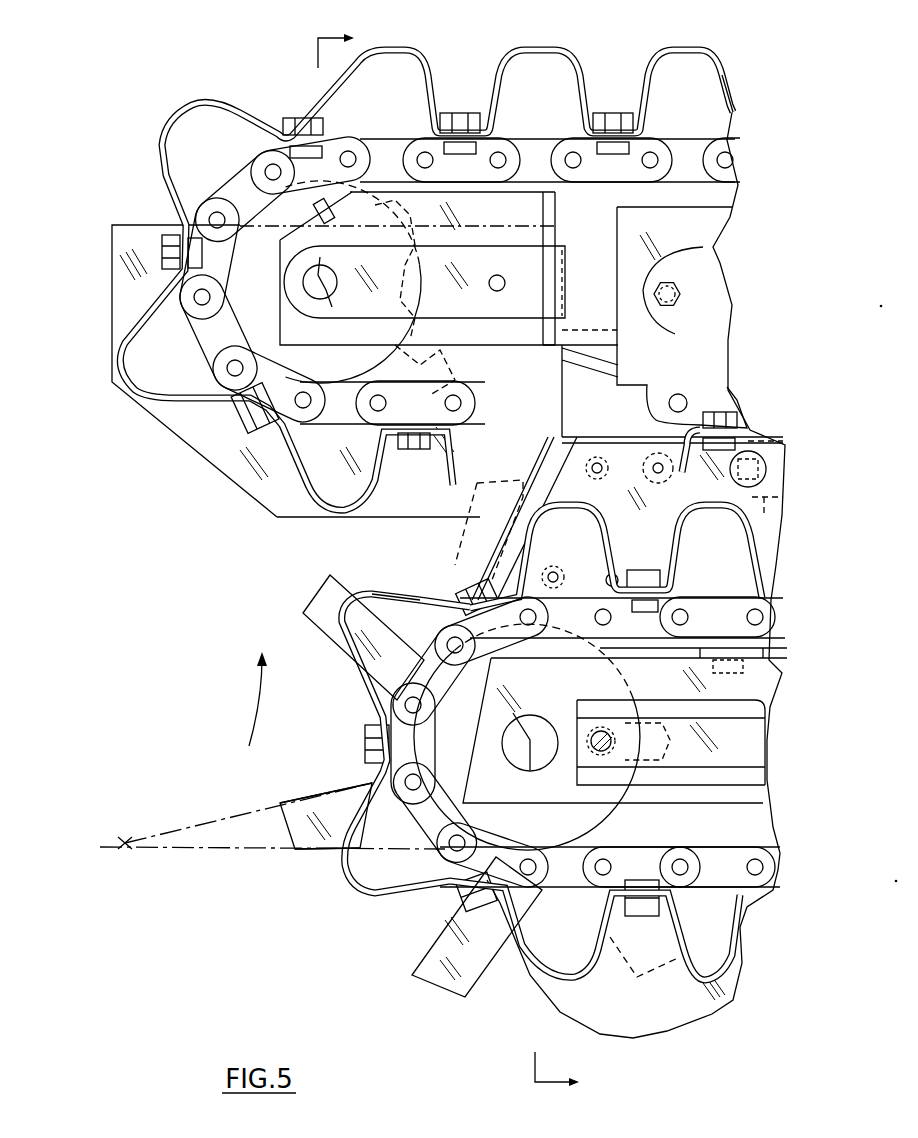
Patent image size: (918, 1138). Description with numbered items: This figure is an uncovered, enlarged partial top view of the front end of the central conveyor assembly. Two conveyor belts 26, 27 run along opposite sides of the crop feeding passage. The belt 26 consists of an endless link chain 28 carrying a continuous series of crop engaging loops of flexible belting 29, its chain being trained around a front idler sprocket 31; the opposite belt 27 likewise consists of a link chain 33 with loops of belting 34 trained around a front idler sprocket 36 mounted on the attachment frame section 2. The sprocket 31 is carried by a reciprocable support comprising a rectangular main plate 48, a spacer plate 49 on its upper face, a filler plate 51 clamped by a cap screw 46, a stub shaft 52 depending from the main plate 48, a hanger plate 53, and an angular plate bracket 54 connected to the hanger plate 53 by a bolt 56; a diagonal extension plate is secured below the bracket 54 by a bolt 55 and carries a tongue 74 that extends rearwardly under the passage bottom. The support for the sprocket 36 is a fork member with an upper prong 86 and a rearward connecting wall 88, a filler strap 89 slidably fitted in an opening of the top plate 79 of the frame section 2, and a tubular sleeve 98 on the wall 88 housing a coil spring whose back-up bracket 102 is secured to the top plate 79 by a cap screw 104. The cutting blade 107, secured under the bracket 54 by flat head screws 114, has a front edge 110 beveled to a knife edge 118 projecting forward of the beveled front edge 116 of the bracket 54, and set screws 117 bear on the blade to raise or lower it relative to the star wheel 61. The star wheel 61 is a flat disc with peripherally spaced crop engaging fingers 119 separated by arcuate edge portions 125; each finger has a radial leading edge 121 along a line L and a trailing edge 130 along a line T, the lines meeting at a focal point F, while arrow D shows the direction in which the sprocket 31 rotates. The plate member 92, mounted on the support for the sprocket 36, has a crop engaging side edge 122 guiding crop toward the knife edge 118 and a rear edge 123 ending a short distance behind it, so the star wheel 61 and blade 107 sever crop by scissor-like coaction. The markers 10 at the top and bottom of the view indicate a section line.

The attachment frame section 2 is at (714, 277).
The section line 10 is at (460, 556).
The conveyor belt 26 is at (672, 840).
The conveyor belt 27 is at (738, 99).
The link chain 28 is at (715, 847).
The loops of flexible belting 29 is at (380, 900).
The front idler sprocket 31 is at (466, 744).
The link chain 33 is at (535, 148).
The loops of flexible belting 34 is at (493, 80).
The front idler sprocket 36 is at (420, 365).
The cap screw 46 is at (614, 741).
The main plate 48 is at (482, 705).
The spacer plate 49 is at (598, 705).
The filler plate 51 is at (722, 700).
The stub shaft 52 is at (540, 716).
The hanger plate 53 is at (739, 667).
The angular plate bracket 54 is at (617, 443).
The bolt 55 is at (730, 471).
The bolt 56 is at (712, 612).
The star wheel 61 is at (432, 999).
The tongue 74 is at (762, 502).
The top plate 79 is at (703, 250).
The upper prong 86 is at (331, 340).
The connecting wall 88 is at (555, 215).
The filler strap 89 is at (496, 246).
The plate member 92 is at (208, 471).
The tubular sleeve 98 is at (598, 238).
The bracket 102 is at (683, 210).
The cap screw 104 is at (676, 304).
The cutting blade 107 is at (566, 452).
The front edge 110 is at (500, 565).
The countersunk flat head screws 114 is at (655, 478).
The beveled front edge 116 is at (541, 553).
The set screws 117 is at (596, 473).
The knife edge 118 is at (497, 548).
The crop engaging fingers 119 is at (312, 595).
The leading edge 121 is at (326, 790).
The crop engaging side edge 122 is at (294, 520).
The rear edge 123 is at (566, 392).
The arcuate edge portions 125 is at (414, 596).
The trailing edge 130 is at (316, 852).
The arrow D is at (253, 705).
The focal point F is at (126, 850).
The line L is at (178, 825).
The line T is at (222, 850).